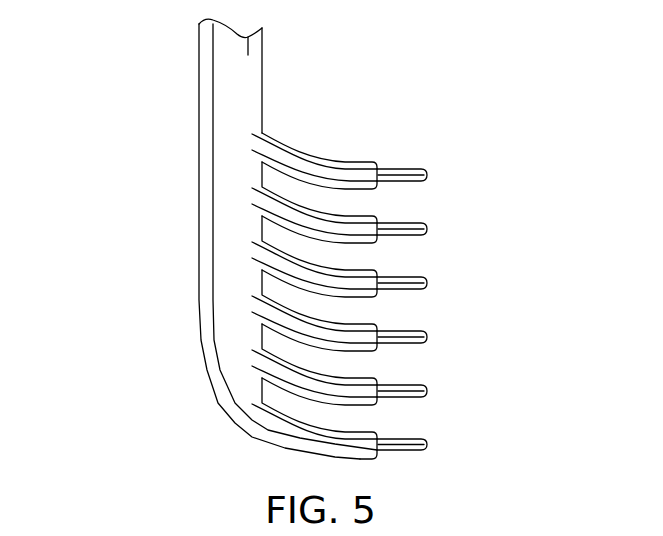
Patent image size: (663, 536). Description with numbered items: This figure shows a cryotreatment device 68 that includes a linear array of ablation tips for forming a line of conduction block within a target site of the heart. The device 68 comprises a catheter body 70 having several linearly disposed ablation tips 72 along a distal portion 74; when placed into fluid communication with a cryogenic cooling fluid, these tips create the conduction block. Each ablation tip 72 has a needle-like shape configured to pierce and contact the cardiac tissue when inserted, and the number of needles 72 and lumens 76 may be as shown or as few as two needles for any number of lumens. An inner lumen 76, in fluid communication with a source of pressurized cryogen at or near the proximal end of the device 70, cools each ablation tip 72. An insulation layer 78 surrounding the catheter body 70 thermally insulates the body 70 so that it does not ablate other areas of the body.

The cryotreatment device 68 is at (283, 75).
The catheter body 70 is at (173, 75).
The ablation tips 72 is at (428, 228).
The distal portion 74 is at (180, 283).
The inner lumen 76 is at (227, 133).
The insulation layer 78 is at (297, 160).